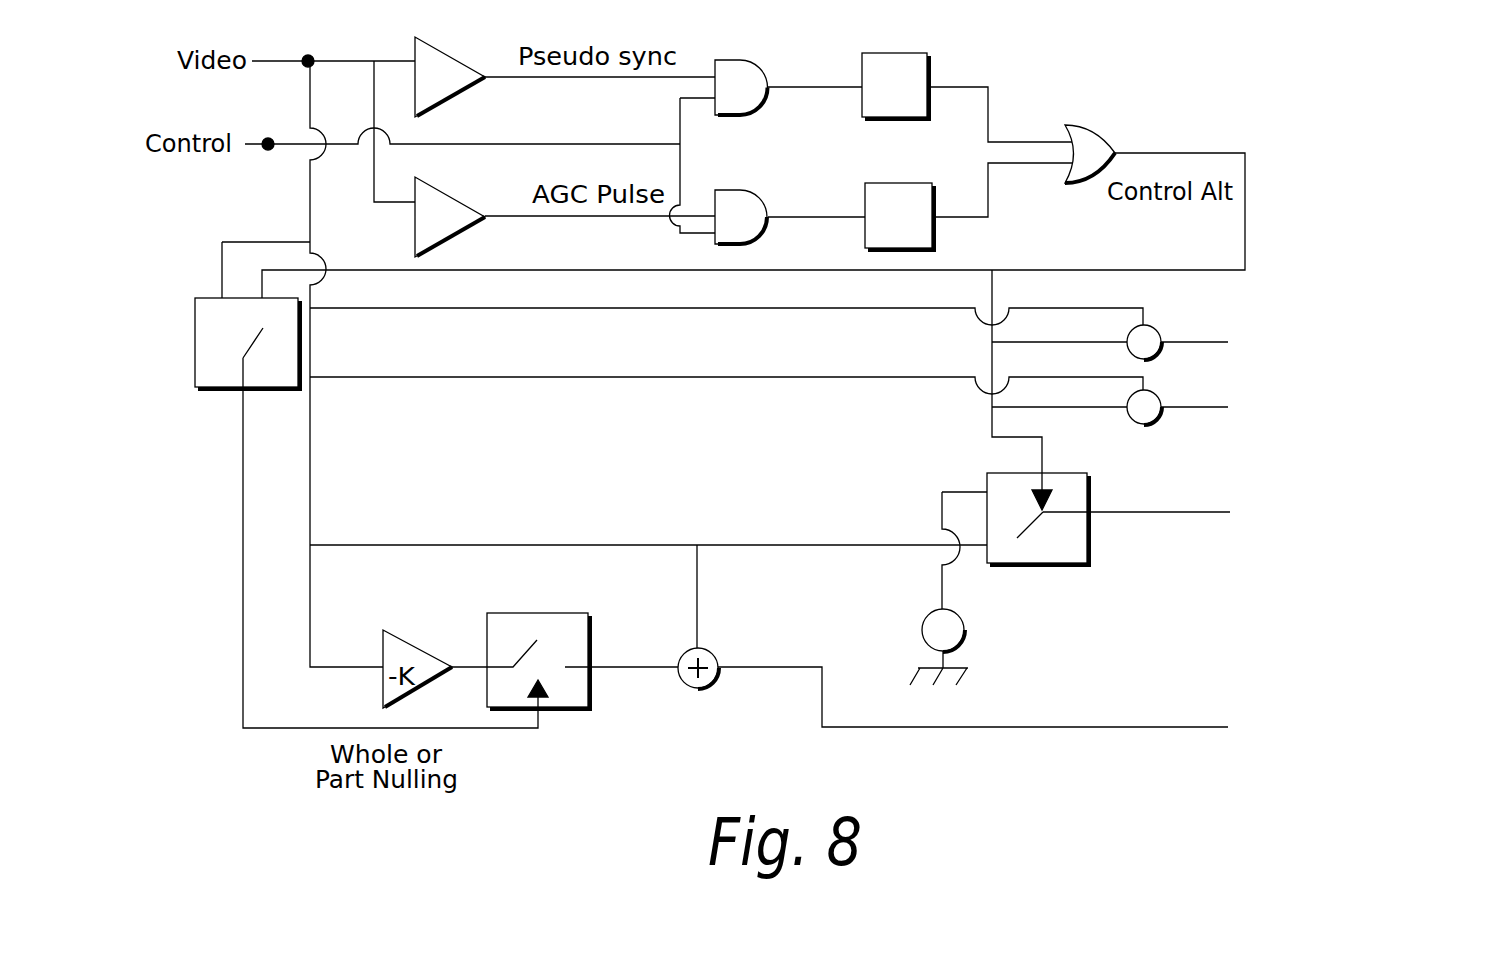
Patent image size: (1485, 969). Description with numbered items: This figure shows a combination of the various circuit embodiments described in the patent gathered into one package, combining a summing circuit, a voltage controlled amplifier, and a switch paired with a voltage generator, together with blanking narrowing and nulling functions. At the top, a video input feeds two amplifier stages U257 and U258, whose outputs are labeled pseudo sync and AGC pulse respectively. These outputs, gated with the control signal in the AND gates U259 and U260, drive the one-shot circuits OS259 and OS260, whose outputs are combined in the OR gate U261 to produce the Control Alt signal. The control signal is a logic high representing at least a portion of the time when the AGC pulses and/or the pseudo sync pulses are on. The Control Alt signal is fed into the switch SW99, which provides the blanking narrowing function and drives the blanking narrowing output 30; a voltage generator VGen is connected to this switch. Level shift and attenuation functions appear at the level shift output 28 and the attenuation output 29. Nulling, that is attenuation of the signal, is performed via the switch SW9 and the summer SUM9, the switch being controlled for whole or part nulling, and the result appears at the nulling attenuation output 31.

The video amplifier V1 U257 is at (465, 73).
The video amplifier V2 U258 is at (466, 212).
The AND gate (pseudo sync) U259 is at (761, 72).
The AND gate (AGC pulse) U260 is at (761, 204).
The one-shot 259 OS259 is at (895, 86).
The one-shot 260 OS260 is at (899, 216).
The OR gate (control alt) U261 is at (1101, 137).
The switch SW99 is at (1039, 538).
The switch SW9 is at (538, 643).
The summer SUM9 is at (686, 637).
The voltage generator VGen is at (976, 588).
The level shift output 28 is at (836, 336).
The attenuation output 29 is at (842, 400).
The blanking narrowing output 30 is at (1258, 515).
The nulling attenuation output 31 is at (1093, 705).